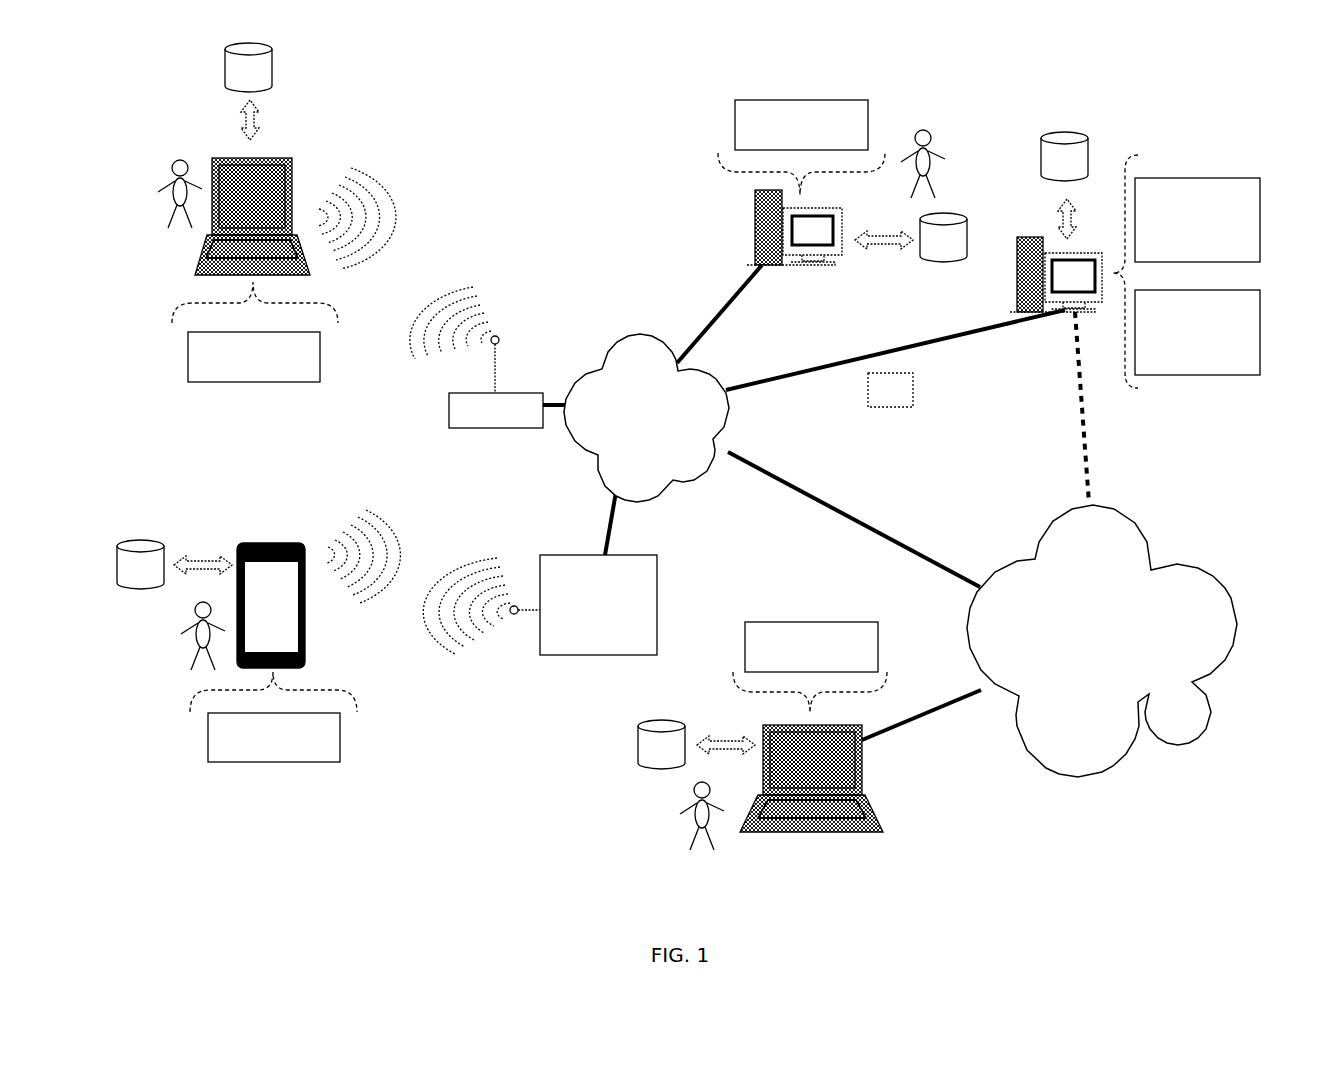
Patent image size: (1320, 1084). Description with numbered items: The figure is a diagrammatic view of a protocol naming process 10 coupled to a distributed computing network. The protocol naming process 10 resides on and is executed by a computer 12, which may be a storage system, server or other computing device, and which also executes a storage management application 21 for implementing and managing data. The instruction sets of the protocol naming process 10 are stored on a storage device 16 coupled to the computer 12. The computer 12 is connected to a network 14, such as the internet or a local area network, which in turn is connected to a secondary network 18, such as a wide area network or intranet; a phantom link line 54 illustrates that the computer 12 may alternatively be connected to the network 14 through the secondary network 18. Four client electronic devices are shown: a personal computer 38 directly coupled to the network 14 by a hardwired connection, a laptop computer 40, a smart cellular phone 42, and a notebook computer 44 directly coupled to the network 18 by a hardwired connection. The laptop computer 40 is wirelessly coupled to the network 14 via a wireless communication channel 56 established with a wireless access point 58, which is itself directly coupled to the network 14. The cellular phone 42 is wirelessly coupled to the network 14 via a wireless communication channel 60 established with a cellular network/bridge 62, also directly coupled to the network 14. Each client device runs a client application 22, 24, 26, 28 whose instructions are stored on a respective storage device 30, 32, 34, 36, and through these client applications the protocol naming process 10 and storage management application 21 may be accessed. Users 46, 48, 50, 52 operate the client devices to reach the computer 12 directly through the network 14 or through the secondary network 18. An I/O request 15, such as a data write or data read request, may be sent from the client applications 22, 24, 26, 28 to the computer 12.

The protocol naming process 10 is at (1260, 210).
The computer 12 is at (1017, 253).
The network 14 is at (646, 418).
The I/O request 15 is at (868, 391).
The storage device 16 is at (1064, 185).
The secondary network 18 is at (1102, 641).
The storage management application 21 is at (1260, 323).
The client application 22 is at (868, 128).
The client application 24 is at (320, 367).
The client application 26 is at (340, 728).
The client application 28 is at (878, 645).
The storage device 30 is at (911, 237).
The storage device 32 is at (248, 91).
The storage device 34 is at (174, 564).
The storage device 36 is at (696, 744).
The client electronic device 38 is at (745, 217).
The client electronic device 40 is at (292, 181).
The client electronic device 42 is at (312, 590).
The client electronic device 44 is at (862, 770).
The user 46 is at (945, 145).
The user 48 is at (145, 187).
The user 50 is at (180, 618).
The user 52 is at (665, 808).
The phantom link line 54 is at (1048, 383).
The wireless communication channel 56 is at (437, 232).
The wireless access point (WAP) 58 is at (443, 410).
The wireless communication channel 60 is at (427, 557).
The cellular network/bridge 62 is at (657, 570).